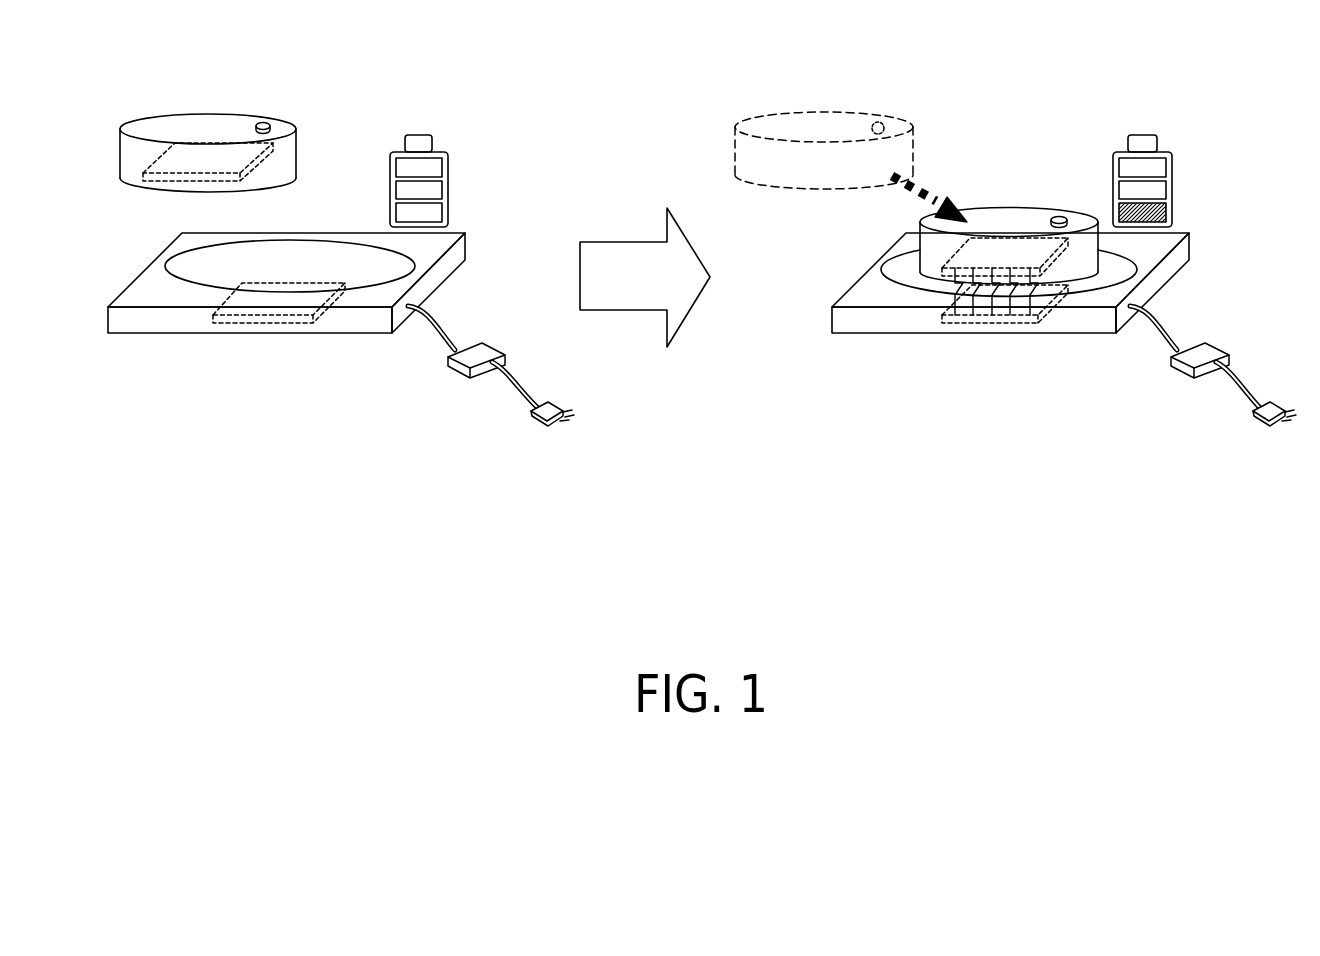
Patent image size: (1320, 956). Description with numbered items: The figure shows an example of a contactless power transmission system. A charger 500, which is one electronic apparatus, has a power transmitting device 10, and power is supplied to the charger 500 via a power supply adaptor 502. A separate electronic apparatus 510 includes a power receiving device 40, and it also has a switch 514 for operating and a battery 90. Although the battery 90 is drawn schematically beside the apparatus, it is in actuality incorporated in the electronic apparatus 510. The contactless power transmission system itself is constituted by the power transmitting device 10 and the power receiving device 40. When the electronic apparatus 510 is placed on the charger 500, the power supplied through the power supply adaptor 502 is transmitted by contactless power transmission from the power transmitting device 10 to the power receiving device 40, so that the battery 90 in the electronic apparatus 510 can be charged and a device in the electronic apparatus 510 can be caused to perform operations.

The power transmitting device 10 is at (268, 323).
The power receiving device 40 is at (167, 158).
The battery 90 is at (421, 133).
The charger 500 is at (160, 323).
The power supply adaptor 502 is at (493, 343).
The electronic apparatus 510 is at (215, 112).
The switch 514 is at (268, 121).